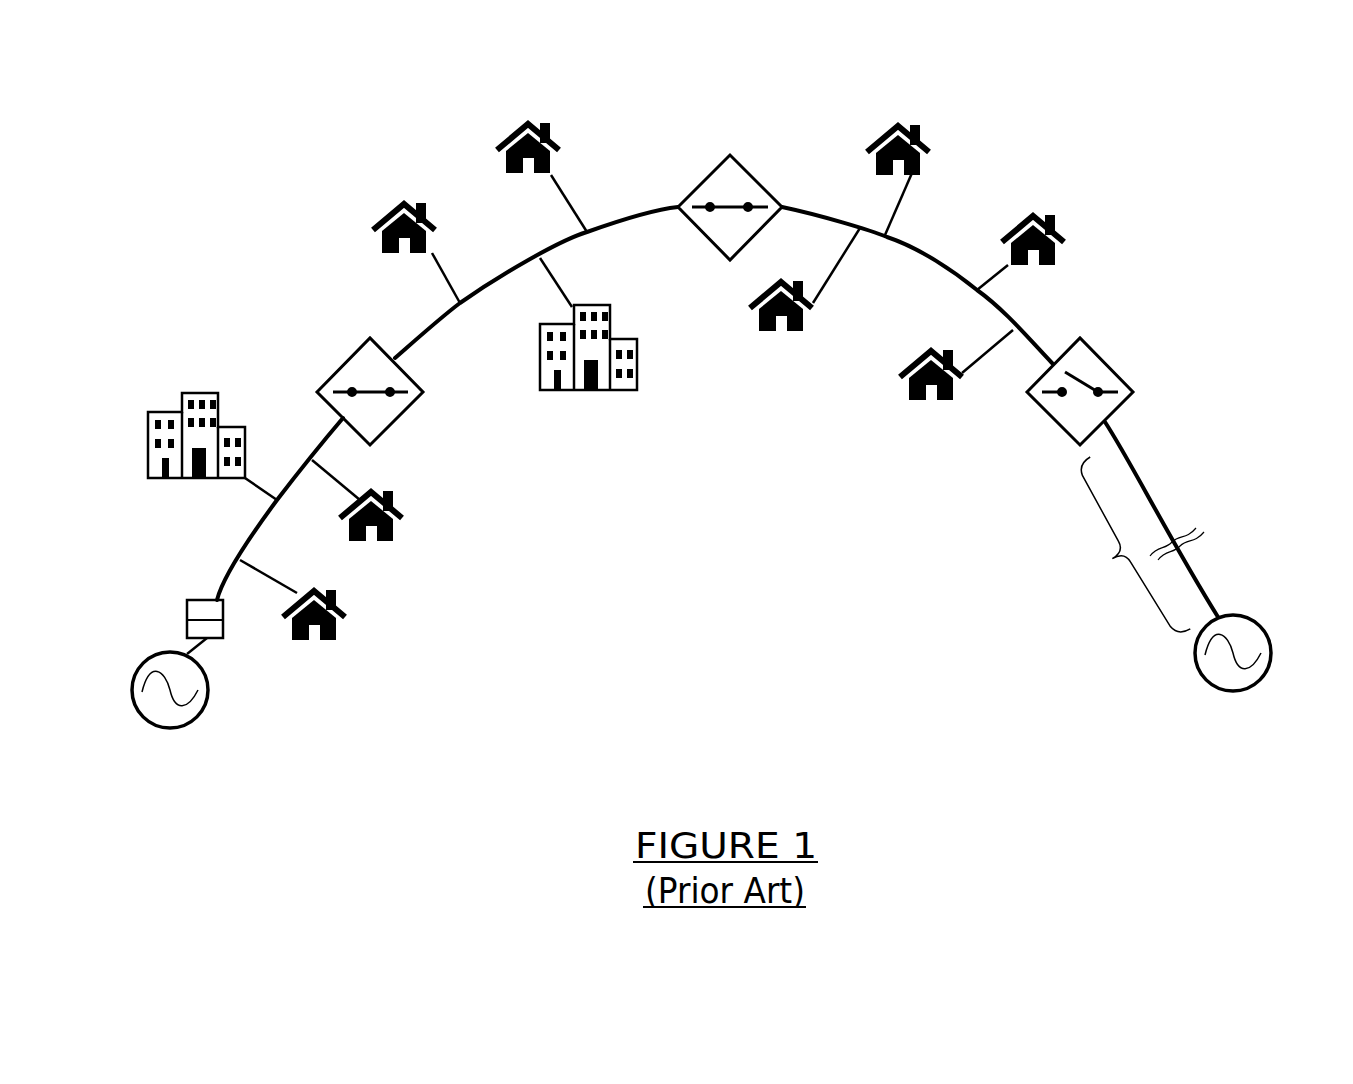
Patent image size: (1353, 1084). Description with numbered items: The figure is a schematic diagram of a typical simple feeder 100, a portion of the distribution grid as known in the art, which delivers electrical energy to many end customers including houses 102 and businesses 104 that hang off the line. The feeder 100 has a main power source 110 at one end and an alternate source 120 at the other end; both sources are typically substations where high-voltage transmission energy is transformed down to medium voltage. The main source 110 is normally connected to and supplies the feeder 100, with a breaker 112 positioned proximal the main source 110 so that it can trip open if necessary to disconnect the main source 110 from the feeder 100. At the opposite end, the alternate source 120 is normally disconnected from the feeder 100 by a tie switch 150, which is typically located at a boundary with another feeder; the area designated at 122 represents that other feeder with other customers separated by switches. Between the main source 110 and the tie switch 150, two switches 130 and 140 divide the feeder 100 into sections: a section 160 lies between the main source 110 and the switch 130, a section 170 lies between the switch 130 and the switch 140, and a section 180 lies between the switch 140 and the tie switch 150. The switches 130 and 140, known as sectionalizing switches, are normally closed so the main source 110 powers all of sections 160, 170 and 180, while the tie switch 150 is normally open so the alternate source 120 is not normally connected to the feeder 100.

The feeder 100 is at (790, 664).
The houses 102 is at (516, 131).
The businesses 104 is at (196, 392).
The main power source 110 is at (180, 728).
The breaker 112 is at (225, 632).
The alternate source 120 is at (1230, 691).
The area of another feeder 122 is at (1133, 551).
The switch 130 is at (398, 418).
The switch 140 is at (740, 160).
The tie switch 150 is at (1108, 362).
The section 160 is at (255, 530).
The section 170 is at (437, 320).
The section 180 is at (925, 257).